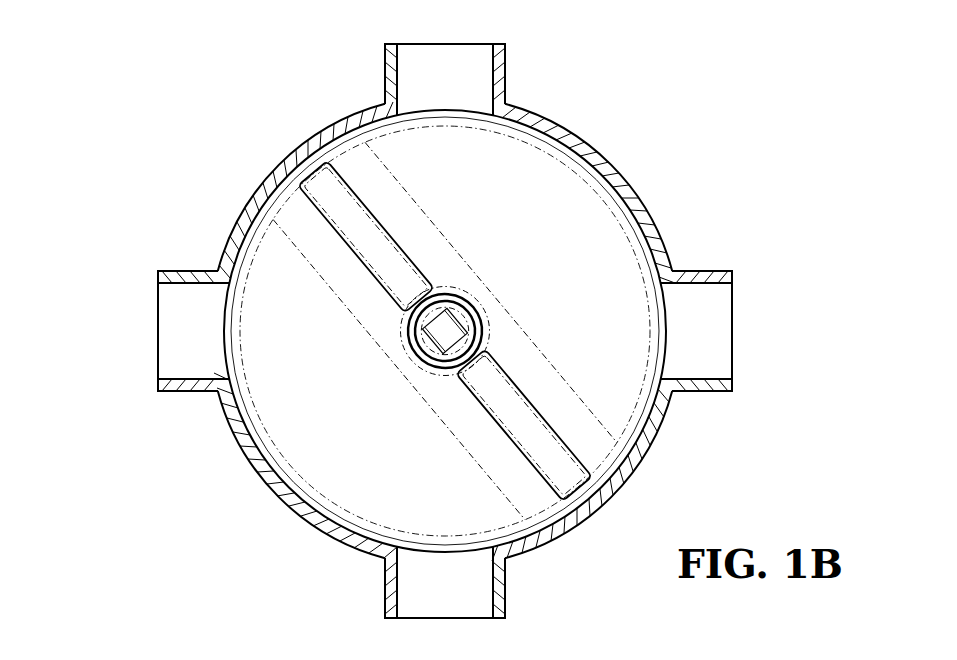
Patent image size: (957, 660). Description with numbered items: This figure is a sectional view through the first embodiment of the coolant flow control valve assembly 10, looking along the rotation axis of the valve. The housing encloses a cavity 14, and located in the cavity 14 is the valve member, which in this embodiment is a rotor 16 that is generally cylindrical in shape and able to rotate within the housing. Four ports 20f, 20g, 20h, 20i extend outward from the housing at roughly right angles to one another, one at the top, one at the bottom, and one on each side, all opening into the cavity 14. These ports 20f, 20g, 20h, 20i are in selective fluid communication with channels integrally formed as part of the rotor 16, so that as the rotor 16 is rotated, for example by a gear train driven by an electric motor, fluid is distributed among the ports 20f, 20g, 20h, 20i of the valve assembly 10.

The coolant flow control valve assembly 10 is at (238, 172).
The cavity 14 is at (626, 195).
The rotor 16 is at (611, 262).
The port 20f is at (168, 335).
The port 20g is at (475, 582).
The port 20h is at (713, 313).
The port 20i is at (480, 88).